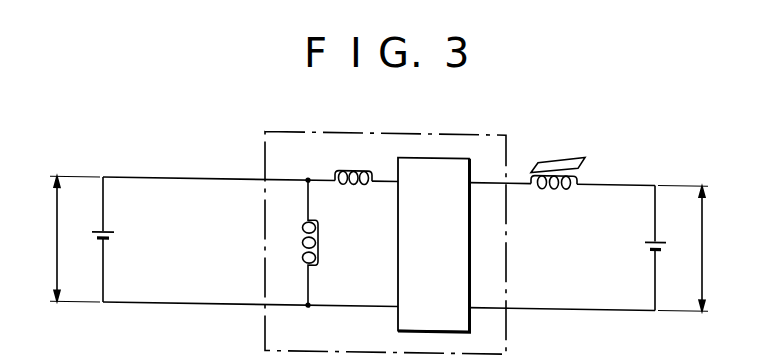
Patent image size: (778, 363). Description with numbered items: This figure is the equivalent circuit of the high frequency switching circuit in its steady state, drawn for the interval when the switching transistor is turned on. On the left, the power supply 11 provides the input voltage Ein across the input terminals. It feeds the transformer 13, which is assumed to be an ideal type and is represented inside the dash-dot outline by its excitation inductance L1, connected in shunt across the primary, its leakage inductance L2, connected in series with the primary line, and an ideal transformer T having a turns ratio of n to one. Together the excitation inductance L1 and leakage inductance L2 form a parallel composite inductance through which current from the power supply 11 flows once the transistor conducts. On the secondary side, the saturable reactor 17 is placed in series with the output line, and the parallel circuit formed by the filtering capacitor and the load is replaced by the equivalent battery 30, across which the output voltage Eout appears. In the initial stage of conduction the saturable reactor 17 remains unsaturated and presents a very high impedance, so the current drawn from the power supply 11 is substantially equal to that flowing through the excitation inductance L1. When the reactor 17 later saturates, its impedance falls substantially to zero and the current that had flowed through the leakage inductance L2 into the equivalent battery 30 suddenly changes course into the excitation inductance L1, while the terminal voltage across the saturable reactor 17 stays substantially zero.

The power supply 11 is at (116, 233).
The transformer 13 is at (265, 138).
The saturable reactor 17 is at (561, 152).
The equivalent battery 30 is at (642, 235).
The excitation inductance L1 is at (322, 237).
The leakage inductance L2 is at (353, 182).
The ideal transformer T is at (471, 250).
The input voltage Ein is at (70, 239).
The output voltage Eout is at (694, 249).